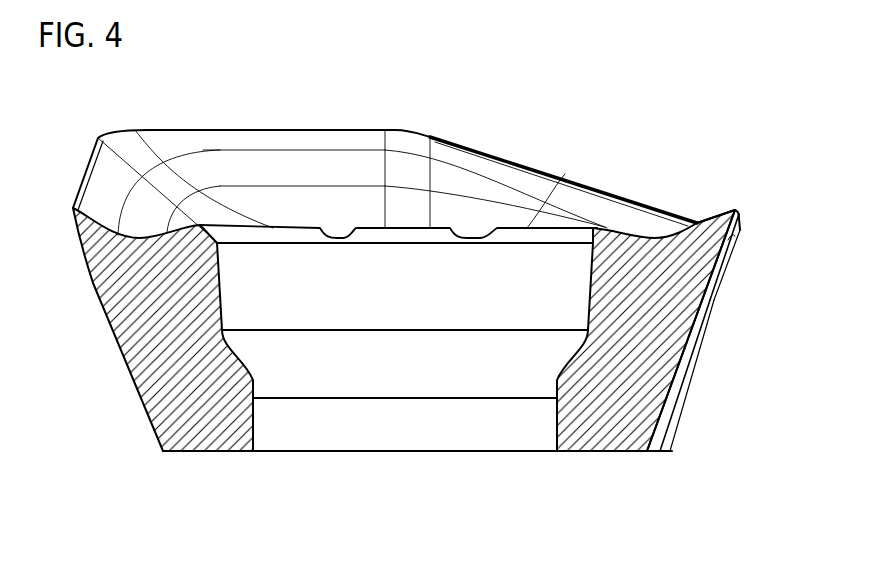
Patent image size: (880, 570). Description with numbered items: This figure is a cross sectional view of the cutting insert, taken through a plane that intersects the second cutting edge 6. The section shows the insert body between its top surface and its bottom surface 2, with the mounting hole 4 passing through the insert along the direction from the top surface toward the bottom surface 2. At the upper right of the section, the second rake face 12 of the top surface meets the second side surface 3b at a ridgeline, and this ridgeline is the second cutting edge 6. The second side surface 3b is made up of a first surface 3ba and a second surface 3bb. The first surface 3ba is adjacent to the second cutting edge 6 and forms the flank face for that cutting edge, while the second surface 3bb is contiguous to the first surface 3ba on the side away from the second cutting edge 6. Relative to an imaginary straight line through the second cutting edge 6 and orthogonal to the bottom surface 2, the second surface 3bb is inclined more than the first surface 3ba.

The bottom surface 2 is at (584, 452).
The second side surface 3b is at (797, 305).
The first surface 3ba is at (739, 230).
The second surface 3bb is at (681, 367).
The mounting hole 4 is at (556, 423).
The second cutting edge 6 is at (735, 208).
The second rake face 12 is at (711, 213).